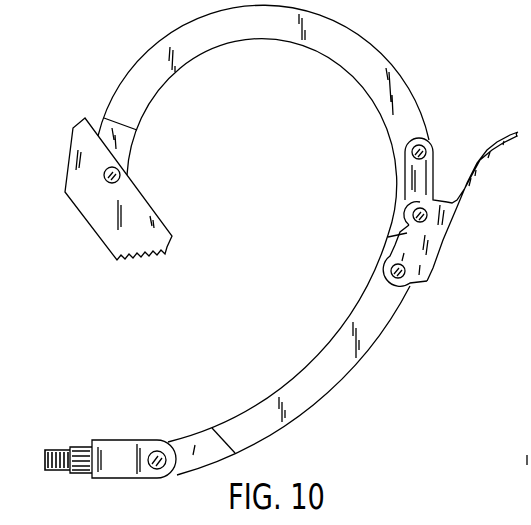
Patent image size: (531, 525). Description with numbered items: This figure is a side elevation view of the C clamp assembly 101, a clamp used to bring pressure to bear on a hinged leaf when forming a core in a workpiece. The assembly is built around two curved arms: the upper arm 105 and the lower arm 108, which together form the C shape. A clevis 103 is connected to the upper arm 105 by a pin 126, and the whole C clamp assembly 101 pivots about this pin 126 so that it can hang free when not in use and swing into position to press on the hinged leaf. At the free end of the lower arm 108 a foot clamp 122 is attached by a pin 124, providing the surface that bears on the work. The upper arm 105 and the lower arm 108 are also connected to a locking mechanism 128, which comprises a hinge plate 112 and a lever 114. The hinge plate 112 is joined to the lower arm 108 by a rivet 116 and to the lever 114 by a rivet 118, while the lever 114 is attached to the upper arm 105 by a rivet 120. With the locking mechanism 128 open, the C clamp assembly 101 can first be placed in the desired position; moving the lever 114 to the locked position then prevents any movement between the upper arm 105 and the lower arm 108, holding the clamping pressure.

The C clamp assembly 101 is at (423, 97).
The lower arm 108 is at (258, 39).
The upper arm 105 is at (253, 417).
The foot clamp 122 is at (152, 217).
The pin 124 is at (119, 173).
The hinge plate 112 is at (436, 168).
The rivet 116 is at (412, 152).
The rivet 118 is at (413, 215).
The rivet 120 is at (392, 270).
The lever 114 is at (438, 238).
The locking mechanism 128 is at (440, 270).
The clevis 103 is at (108, 447).
The pin 126 is at (161, 448).